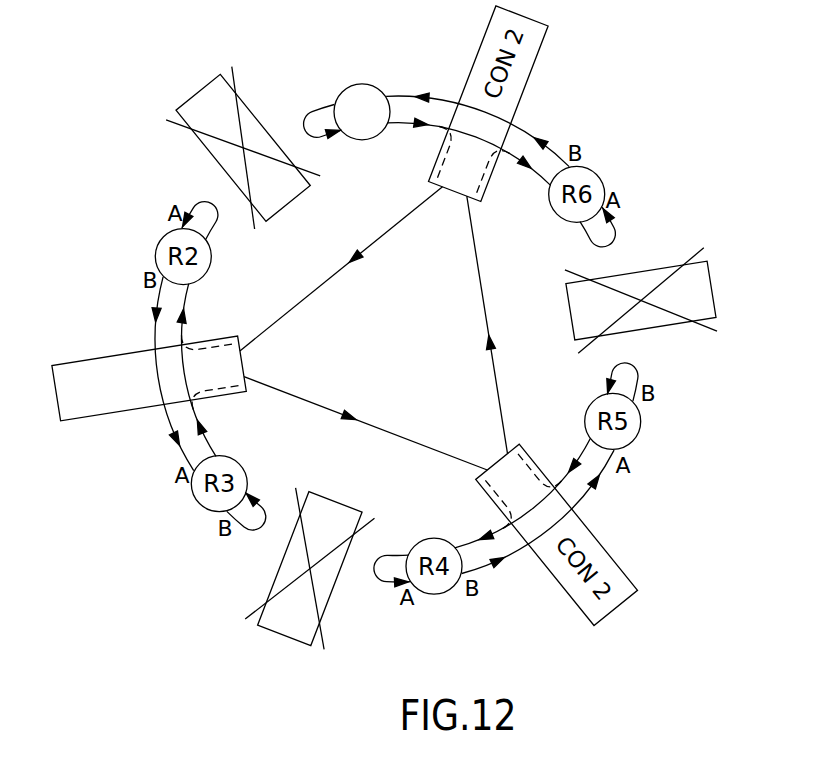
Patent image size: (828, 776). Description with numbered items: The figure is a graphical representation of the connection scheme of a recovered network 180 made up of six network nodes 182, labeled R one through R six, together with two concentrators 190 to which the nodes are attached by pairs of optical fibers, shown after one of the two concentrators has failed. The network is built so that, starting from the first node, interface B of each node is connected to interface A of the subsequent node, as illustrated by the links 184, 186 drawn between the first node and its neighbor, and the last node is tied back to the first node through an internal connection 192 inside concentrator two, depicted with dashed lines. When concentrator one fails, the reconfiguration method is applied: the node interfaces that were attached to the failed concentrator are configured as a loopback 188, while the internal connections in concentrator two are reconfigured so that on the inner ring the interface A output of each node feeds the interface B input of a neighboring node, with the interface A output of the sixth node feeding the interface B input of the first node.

The network 180 is at (183, 575).
The network nodes 182 is at (360, 84).
The link 184 is at (447, 96).
The link 186 is at (433, 127).
The loopback 188 is at (312, 112).
The concentrators 190 is at (73, 362).
The internal connection 192 is at (160, 390).